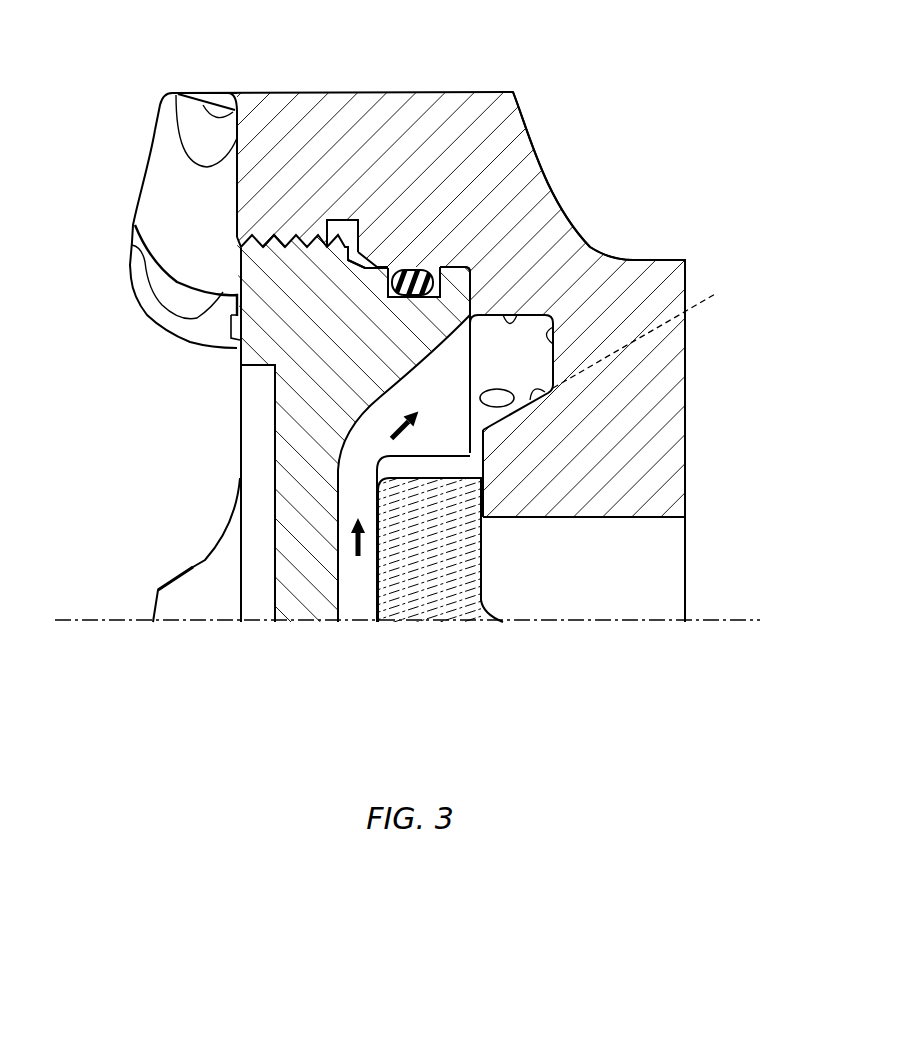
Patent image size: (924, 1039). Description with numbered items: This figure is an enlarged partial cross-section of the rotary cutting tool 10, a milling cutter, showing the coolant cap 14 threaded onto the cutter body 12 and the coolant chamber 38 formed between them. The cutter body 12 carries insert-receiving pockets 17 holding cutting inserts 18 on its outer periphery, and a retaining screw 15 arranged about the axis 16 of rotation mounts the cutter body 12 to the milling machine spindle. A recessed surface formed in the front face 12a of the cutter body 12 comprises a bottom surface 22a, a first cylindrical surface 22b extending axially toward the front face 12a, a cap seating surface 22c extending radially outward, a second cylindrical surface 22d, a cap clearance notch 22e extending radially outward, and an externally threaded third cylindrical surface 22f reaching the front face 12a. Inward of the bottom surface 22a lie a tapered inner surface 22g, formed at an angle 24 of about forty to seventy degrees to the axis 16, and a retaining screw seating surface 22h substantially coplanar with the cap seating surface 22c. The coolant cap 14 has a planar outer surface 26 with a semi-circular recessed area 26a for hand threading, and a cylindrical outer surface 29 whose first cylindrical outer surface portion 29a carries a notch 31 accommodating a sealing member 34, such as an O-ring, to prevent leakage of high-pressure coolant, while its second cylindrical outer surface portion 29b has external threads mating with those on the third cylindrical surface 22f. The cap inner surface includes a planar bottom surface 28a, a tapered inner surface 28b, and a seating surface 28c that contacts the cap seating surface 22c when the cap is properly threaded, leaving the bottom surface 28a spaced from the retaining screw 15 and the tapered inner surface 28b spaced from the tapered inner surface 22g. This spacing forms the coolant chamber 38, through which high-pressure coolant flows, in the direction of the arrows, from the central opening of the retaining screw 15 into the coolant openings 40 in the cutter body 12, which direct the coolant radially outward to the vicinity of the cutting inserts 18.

The rotary cutting tool 10 is at (72, 84).
The cutter body 12 is at (592, 210).
The front face 12a is at (231, 193).
The coolant cap 14 is at (228, 438).
The retaining screw 15 is at (443, 604).
The axis 16 is at (725, 620).
The insert-receiving pockets 17 is at (133, 219).
The cutting inserts 18 is at (124, 274).
The bottom surface 22a is at (607, 261).
The first cylindrical surface 22b is at (518, 315).
The cap seating surface 22c is at (461, 264).
The second cylindrical surface 22d is at (380, 270).
The cap clearance notch 22e is at (346, 219).
The third cylindrical surface 22f is at (290, 237).
The tapered inner surface 22g is at (543, 393).
The retaining screw seating surface 22h is at (468, 452).
The angle 24 is at (590, 375).
The outer surface 26 is at (230, 320).
The recessed area 26a is at (275, 458).
The bottom surface 28a is at (337, 527).
The tapered inner surface 28b is at (395, 398).
The seating surface 28c is at (482, 300).
The cylindrical outer surface 29 is at (378, 242).
The first cylindrical outer surface portion 29a is at (451, 266).
The second cylindrical outer surface portion 29b is at (267, 246).
The notch 31 is at (428, 266).
The sealing member 34 is at (412, 268).
The coolant chamber 38 is at (529, 362).
The coolant openings 40 is at (497, 390).